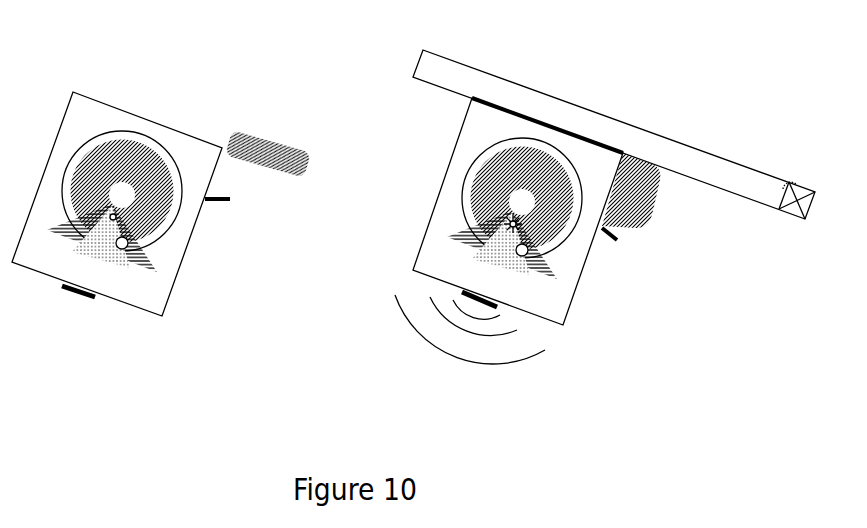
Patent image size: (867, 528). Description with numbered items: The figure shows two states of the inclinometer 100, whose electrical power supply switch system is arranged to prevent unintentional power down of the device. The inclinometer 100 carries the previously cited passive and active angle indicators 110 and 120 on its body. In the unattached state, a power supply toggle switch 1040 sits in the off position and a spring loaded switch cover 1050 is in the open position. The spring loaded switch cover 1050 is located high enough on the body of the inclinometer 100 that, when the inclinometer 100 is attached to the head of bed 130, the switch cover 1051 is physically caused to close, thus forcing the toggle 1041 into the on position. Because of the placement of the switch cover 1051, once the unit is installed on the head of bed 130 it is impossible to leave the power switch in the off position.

The inclinometer 100 is at (157, 288).
The passive angle indicator 110 is at (108, 135).
The active angle indicator 120 is at (117, 248).
The head of bed 130 is at (518, 103).
The power supply toggle switch 1040 is at (233, 201).
The spring loaded switch cover 1050 is at (292, 133).
The toggle 1041 is at (630, 238).
The switch cover 1051 is at (652, 172).